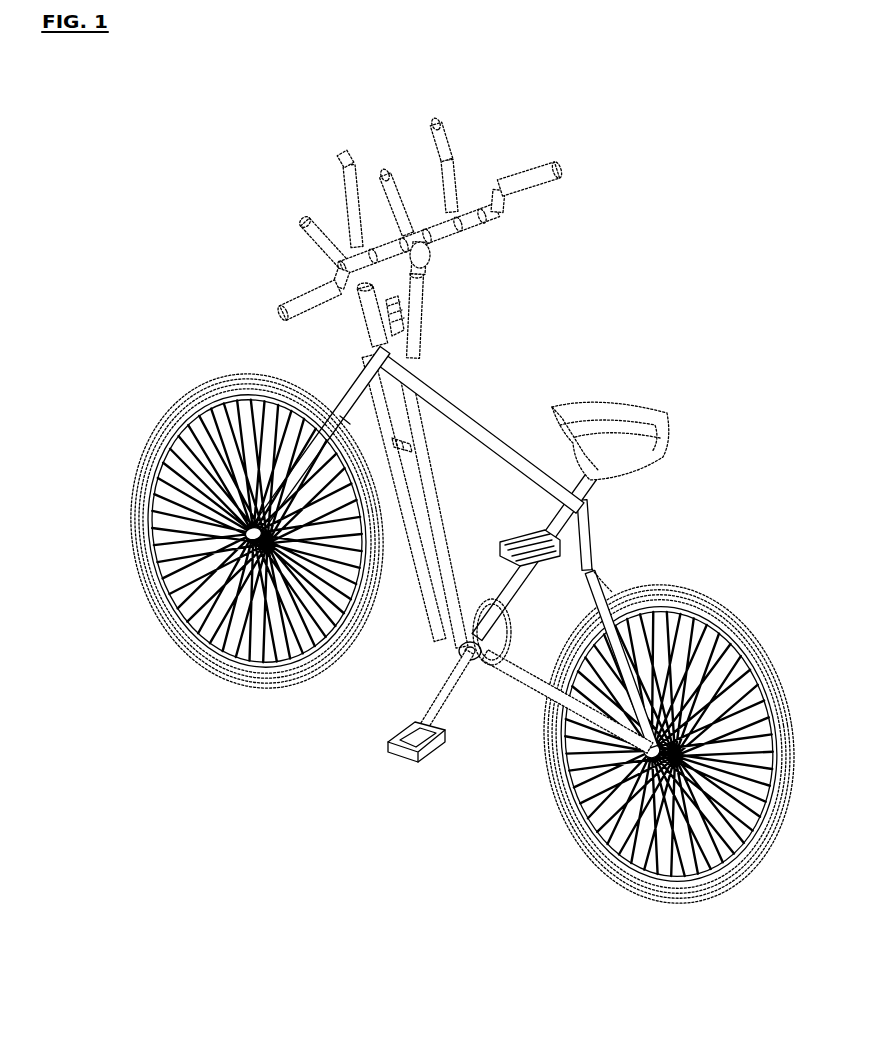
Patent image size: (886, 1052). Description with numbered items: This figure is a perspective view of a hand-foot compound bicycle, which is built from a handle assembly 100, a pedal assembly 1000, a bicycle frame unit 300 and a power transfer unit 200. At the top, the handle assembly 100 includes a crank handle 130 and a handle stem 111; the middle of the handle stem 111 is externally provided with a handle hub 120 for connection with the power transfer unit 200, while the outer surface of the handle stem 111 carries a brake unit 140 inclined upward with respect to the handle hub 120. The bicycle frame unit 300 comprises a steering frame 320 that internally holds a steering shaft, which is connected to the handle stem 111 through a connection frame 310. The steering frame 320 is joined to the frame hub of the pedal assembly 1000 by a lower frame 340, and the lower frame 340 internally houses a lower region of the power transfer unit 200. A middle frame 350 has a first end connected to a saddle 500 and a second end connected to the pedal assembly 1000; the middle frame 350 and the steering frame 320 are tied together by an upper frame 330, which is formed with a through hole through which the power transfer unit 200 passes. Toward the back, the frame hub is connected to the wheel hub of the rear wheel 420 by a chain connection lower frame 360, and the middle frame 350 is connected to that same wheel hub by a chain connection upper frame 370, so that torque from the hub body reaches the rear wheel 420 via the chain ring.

The handle assembly 100 is at (401, 208).
The handle stem 111 is at (487, 217).
The handle hub 120 is at (437, 246).
The crank handle 130 is at (300, 302).
The brake unit 140 is at (347, 167).
The power transfer unit 200 is at (432, 318).
The bicycle frame unit 300 is at (478, 541).
The connection frame 310 is at (427, 280).
The steering frame 320 is at (340, 382).
The upper frame 330 is at (450, 407).
The lower frame 340 is at (435, 566).
The middle frame 350 is at (555, 566).
The chain connection lower frame 360 is at (526, 702).
The chain connection upper frame 370 is at (600, 572).
The rear wheel 420 is at (612, 848).
The saddle 500 is at (630, 425).
The pedal assembly 1000 is at (488, 700).